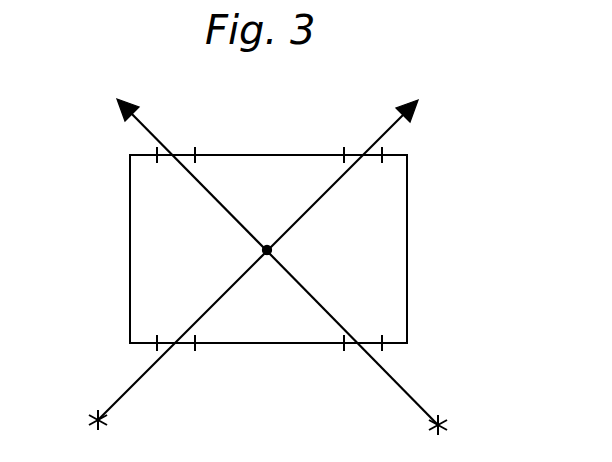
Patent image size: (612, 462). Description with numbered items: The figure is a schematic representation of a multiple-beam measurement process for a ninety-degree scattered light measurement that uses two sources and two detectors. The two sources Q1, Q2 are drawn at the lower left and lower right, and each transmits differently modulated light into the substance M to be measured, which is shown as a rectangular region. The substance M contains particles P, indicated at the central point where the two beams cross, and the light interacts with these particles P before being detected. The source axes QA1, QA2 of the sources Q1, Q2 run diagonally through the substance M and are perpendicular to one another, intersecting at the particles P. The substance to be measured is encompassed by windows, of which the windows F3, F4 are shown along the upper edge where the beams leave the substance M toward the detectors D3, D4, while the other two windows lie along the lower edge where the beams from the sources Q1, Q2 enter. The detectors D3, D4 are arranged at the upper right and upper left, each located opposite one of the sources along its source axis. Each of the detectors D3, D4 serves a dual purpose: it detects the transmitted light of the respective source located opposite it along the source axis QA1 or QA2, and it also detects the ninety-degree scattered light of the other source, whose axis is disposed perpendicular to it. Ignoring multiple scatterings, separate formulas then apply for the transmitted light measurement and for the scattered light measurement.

The substance to be measured M is at (156, 226).
The particles P is at (275, 251).
The source axis QA1 is at (233, 288).
The source axis QA2 is at (303, 288).
The detector D3 is at (355, 163).
The detector D4 is at (176, 161).
The window F3 is at (353, 157).
The window F4 is at (178, 157).
The source Q1 is at (77, 426).
The source Q2 is at (459, 430).